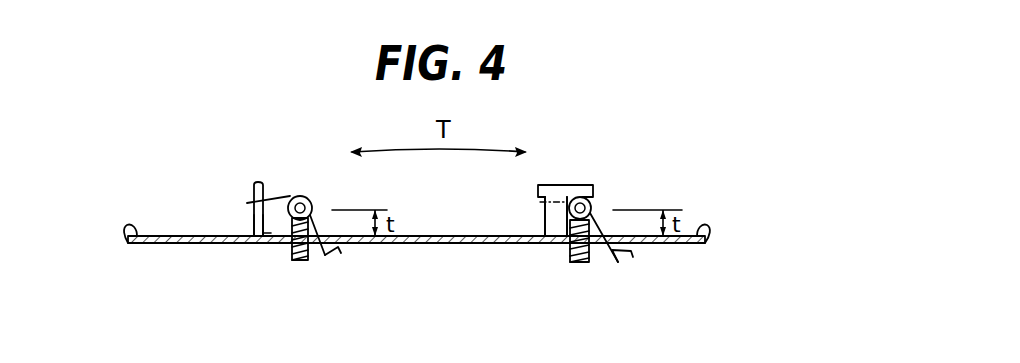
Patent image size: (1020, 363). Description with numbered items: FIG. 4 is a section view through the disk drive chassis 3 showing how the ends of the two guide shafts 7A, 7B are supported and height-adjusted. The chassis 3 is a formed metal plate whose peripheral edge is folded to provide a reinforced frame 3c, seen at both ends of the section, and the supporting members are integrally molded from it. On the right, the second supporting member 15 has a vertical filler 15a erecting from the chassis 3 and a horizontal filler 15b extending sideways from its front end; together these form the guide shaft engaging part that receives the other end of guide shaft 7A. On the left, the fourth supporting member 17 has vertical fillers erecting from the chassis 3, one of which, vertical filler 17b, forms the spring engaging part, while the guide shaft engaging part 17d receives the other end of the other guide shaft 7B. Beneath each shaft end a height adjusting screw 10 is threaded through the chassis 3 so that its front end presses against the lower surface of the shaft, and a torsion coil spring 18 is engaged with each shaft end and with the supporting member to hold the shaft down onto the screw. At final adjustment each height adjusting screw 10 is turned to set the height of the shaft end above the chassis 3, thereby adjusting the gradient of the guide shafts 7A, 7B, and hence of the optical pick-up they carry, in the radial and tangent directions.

The chassis 3 is at (450, 243).
The reinforced frame 3c is at (126, 227).
The guide shaft 7A is at (592, 204).
The guide shaft 7B is at (299, 197).
The height adjusting screw 10 is at (292, 258).
The second supporting member 15 is at (675, 201).
The vertical filler 15a is at (562, 225).
The horizontal filler 15b is at (595, 186).
The fourth supporting member 17 is at (191, 164).
The vertical filler 17b is at (253, 222).
The guide shaft engaging part 17d is at (258, 209).
The torsion coil spring 18 is at (334, 252).